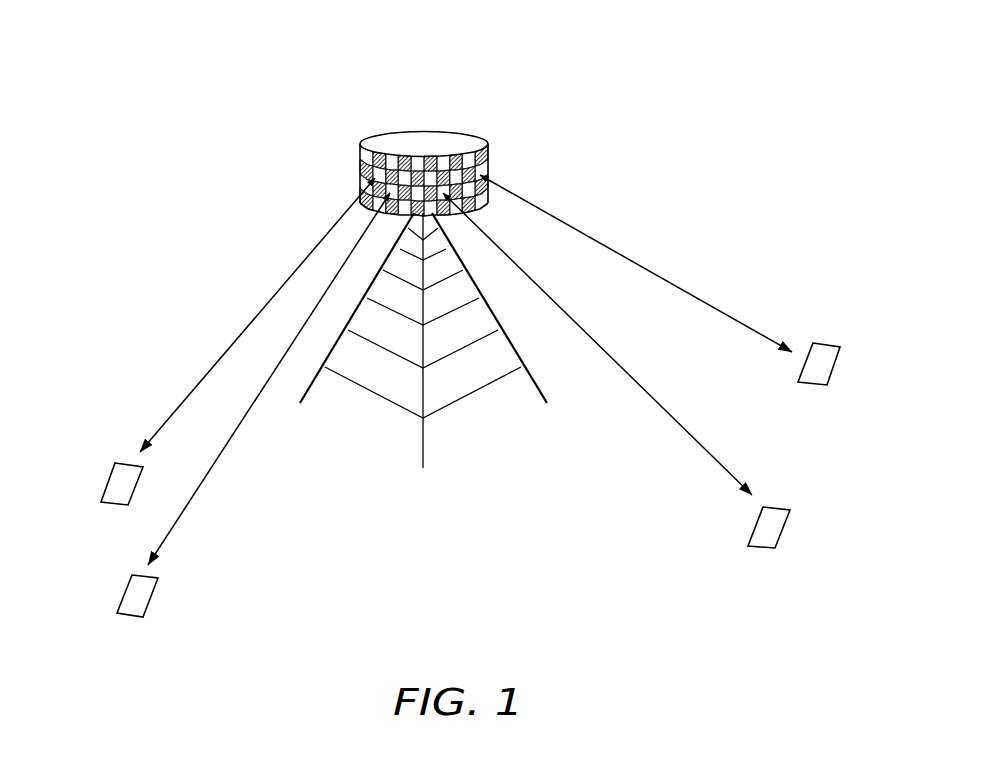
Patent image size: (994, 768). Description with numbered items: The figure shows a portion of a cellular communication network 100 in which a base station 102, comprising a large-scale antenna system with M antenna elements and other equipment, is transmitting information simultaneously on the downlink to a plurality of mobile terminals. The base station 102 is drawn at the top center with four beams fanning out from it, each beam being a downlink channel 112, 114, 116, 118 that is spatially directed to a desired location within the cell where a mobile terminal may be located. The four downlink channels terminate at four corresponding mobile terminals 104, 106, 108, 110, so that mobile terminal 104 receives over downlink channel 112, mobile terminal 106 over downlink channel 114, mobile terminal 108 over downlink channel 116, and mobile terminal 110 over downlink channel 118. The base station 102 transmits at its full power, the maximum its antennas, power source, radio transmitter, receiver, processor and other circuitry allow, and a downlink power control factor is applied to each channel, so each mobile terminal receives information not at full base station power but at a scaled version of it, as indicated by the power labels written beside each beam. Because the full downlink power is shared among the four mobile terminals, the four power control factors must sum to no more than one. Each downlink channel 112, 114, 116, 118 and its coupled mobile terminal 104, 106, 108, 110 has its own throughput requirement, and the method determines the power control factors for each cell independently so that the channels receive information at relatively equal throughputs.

The wireless communication system 100 is at (443, 46).
The base station 102 is at (487, 146).
The mobile terminal 104 is at (110, 487).
The mobile terminal 106 is at (155, 596).
The mobile terminal 108 is at (780, 529).
The mobile terminal 110 is at (832, 365).
The downlink channel 112 is at (287, 282).
The downlink channel 114 is at (243, 422).
The downlink channel 116 is at (626, 372).
The downlink channel 118 is at (558, 218).